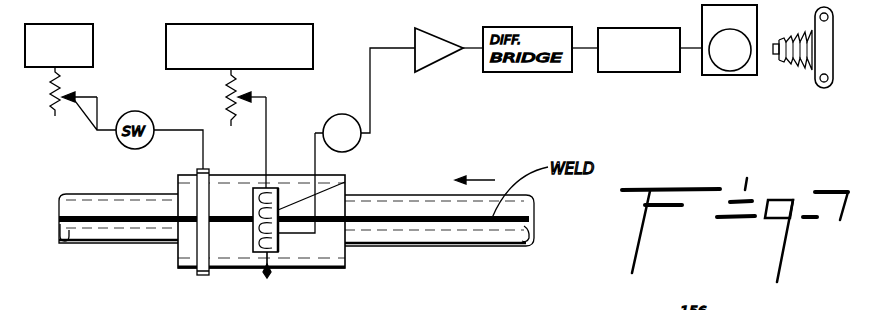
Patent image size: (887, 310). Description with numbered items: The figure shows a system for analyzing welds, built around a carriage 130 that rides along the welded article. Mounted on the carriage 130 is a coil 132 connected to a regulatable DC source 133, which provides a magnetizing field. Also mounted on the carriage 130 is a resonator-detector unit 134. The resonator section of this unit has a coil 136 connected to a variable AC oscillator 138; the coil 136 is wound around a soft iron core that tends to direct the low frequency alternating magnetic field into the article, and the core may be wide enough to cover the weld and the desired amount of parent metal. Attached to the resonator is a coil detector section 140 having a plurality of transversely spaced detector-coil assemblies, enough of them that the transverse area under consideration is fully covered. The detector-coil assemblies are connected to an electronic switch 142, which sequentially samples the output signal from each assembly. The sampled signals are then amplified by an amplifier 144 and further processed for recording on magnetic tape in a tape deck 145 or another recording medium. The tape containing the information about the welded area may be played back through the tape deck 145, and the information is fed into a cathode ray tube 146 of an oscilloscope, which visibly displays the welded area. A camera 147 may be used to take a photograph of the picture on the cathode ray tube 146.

The carriage 130 is at (178, 256).
The coil 132 is at (203, 276).
The regulatable DC source 133 is at (86, 24).
The resonator-detector unit 134 is at (268, 276).
The coil 136 is at (345, 182).
The variable AC oscillator 138 is at (286, 25).
The coil detector section 140 is at (263, 187).
The electronic switch 142 is at (348, 114).
The amplifier 144 is at (442, 33).
The tape deck 145 is at (657, 28).
The cathode ray tube 146 is at (735, 74).
The camera 147 is at (822, 88).